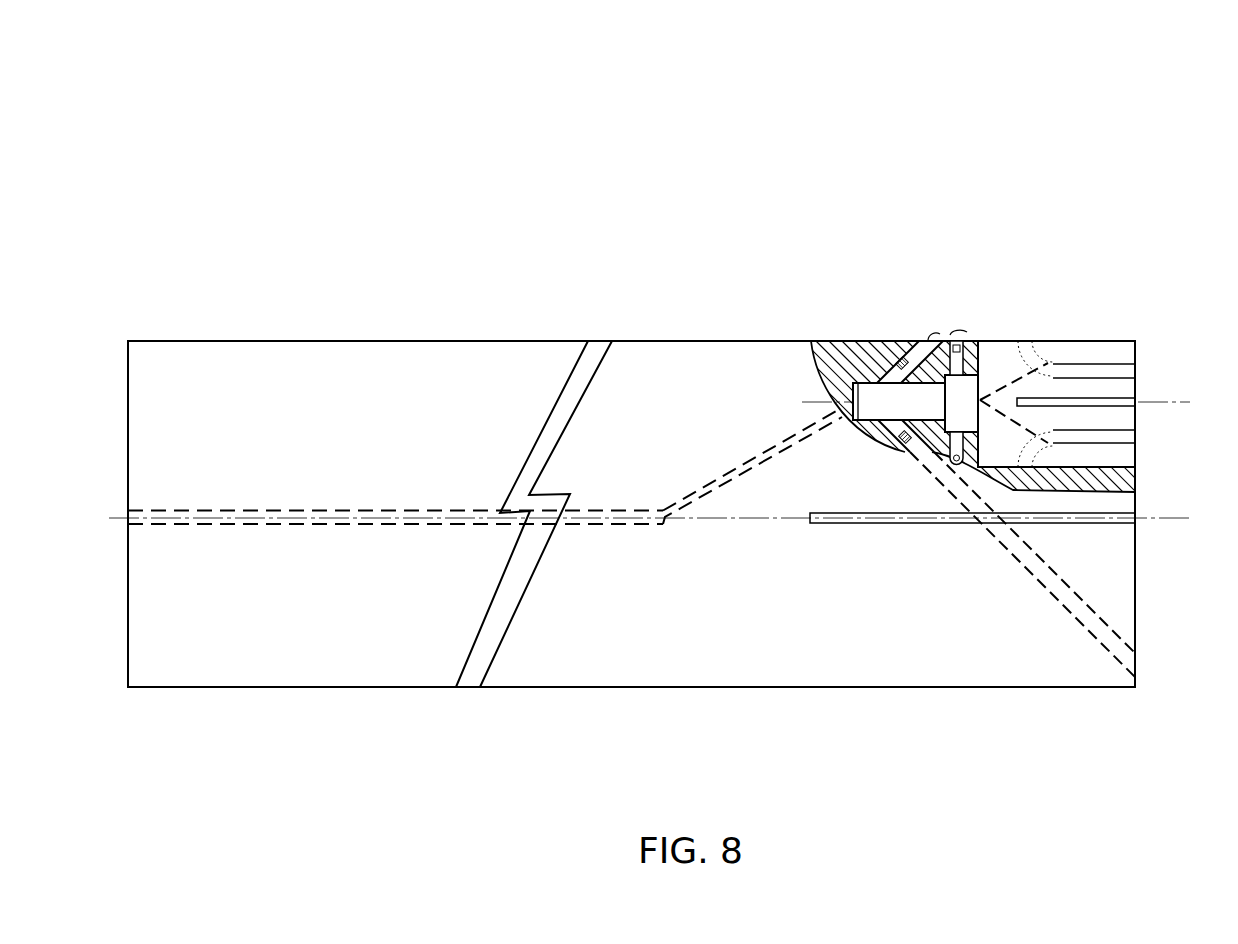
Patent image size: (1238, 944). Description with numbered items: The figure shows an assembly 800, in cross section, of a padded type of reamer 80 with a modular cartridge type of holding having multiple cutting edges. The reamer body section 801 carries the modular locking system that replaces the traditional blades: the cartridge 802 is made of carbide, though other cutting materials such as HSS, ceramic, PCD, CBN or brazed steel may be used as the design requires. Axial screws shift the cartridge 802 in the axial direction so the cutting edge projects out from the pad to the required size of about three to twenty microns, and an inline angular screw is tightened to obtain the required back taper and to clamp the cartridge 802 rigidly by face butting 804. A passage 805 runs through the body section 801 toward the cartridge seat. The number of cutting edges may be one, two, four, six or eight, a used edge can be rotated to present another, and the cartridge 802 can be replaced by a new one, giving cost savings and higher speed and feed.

The downhole tool assembly 800 is at (390, 123).
The tool body housing 80 is at (1105, 328).
The tool body section 801 is at (610, 395).
The cartridge 802 is at (996, 342).
The face butting 804 is at (970, 322).
The fluid passage 805 is at (593, 540).